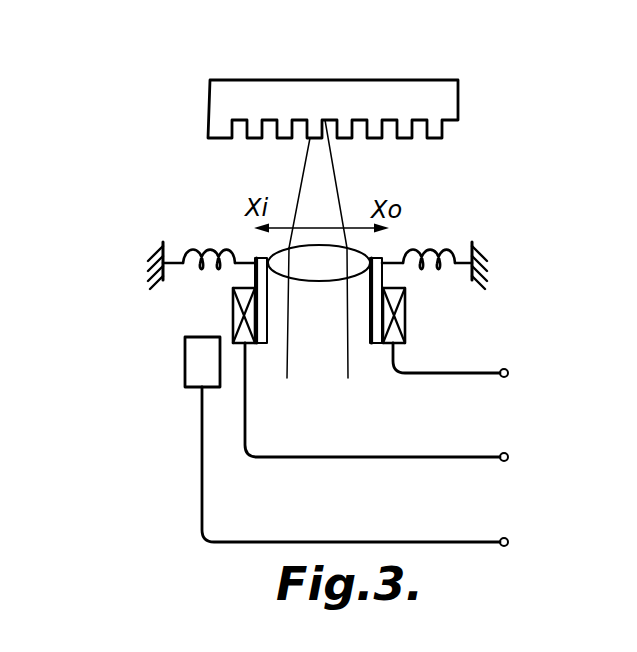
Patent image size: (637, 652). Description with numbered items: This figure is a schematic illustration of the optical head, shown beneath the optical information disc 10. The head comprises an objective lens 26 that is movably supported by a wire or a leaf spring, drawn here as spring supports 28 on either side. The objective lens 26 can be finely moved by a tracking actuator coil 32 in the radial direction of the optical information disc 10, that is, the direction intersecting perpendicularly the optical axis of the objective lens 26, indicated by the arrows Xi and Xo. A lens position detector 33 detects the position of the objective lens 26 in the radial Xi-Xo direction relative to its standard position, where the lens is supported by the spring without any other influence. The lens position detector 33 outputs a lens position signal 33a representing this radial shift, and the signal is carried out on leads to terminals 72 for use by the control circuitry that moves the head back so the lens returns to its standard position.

The optical information disc 10 is at (425, 95).
The objective lens 26 is at (323, 270).
The spring supports 28 is at (205, 245).
The tracking actuator coil 32 is at (233, 305).
The lens position detector 33 is at (193, 365).
The lens position signal 33a is at (288, 542).
The output terminals 72 is at (472, 378).